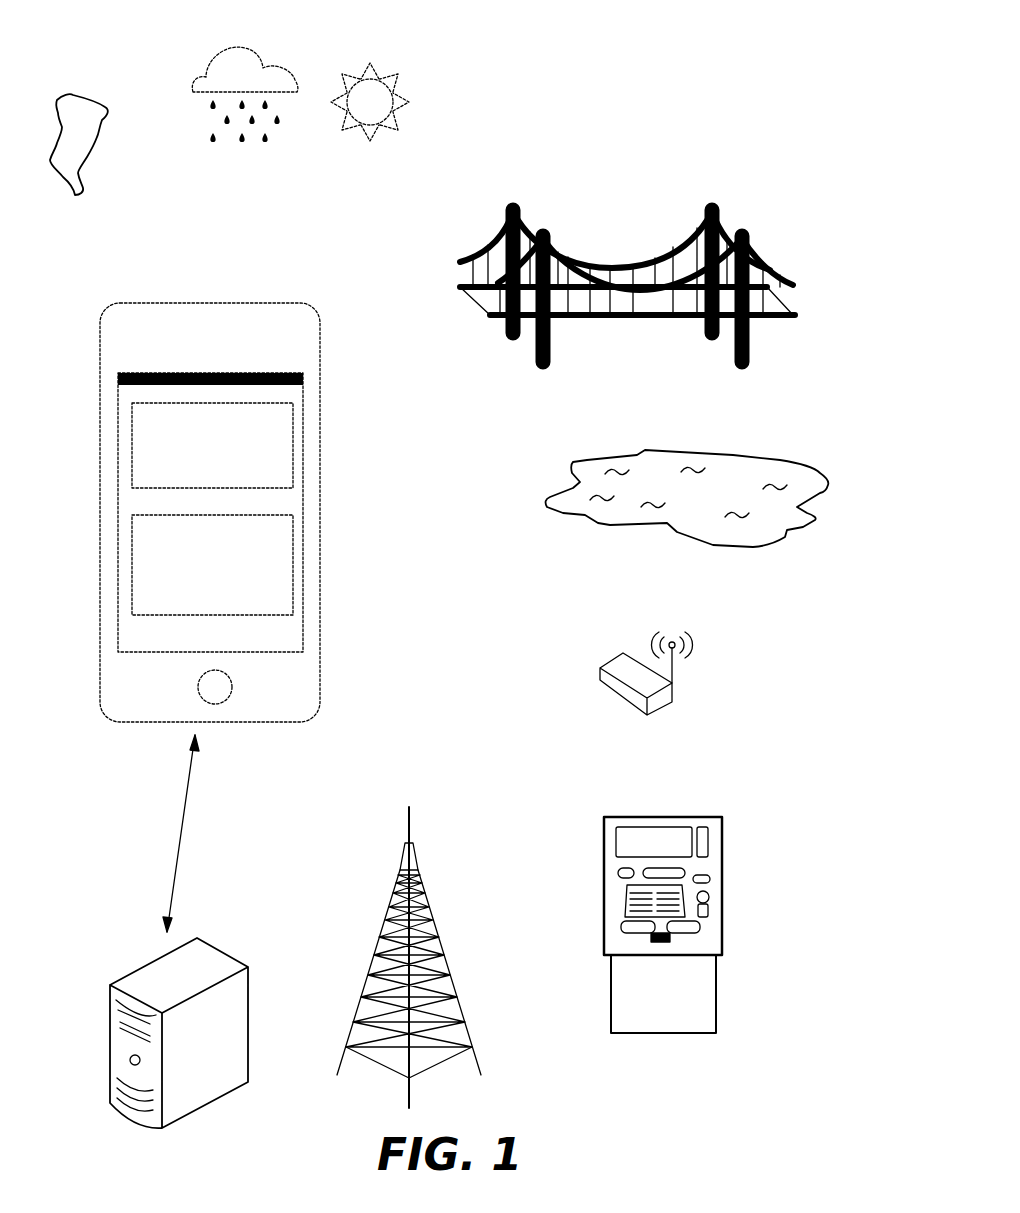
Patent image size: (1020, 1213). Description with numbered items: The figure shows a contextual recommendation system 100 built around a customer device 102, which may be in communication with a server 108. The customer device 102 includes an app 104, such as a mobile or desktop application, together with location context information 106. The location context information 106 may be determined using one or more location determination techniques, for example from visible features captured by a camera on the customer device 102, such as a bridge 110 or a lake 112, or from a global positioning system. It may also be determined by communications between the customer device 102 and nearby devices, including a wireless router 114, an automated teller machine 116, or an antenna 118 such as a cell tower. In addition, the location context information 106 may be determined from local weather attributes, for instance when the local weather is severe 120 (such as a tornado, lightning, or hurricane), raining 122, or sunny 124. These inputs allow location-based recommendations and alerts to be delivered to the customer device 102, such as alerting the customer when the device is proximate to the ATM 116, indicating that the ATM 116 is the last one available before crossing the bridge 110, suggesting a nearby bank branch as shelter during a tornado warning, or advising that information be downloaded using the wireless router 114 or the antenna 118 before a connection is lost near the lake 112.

The contextual recommendation system 100 is at (704, 44).
The customer device 102 is at (215, 303).
The app 104 is at (293, 428).
The location context information 106 is at (293, 565).
The server 108 is at (200, 940).
The bridge 110 is at (728, 213).
The lake 112 is at (685, 452).
The wireless router 114 is at (672, 695).
The automated teller machine (ATM) 116 is at (665, 817).
The antenna 118 is at (427, 903).
The severe weather 120 is at (72, 96).
The raining weather 122 is at (250, 52).
The sunny weather 124 is at (407, 100).